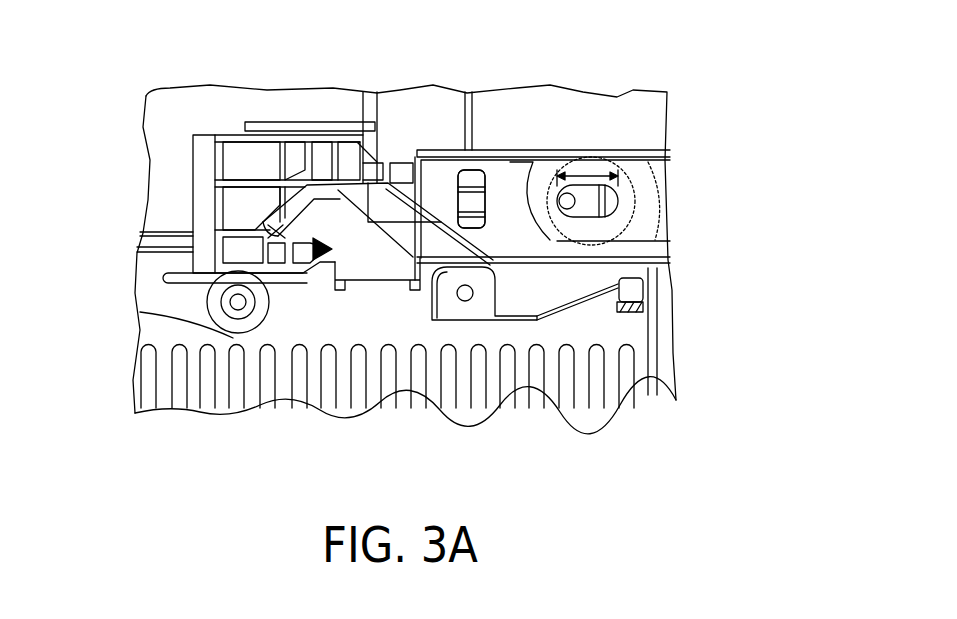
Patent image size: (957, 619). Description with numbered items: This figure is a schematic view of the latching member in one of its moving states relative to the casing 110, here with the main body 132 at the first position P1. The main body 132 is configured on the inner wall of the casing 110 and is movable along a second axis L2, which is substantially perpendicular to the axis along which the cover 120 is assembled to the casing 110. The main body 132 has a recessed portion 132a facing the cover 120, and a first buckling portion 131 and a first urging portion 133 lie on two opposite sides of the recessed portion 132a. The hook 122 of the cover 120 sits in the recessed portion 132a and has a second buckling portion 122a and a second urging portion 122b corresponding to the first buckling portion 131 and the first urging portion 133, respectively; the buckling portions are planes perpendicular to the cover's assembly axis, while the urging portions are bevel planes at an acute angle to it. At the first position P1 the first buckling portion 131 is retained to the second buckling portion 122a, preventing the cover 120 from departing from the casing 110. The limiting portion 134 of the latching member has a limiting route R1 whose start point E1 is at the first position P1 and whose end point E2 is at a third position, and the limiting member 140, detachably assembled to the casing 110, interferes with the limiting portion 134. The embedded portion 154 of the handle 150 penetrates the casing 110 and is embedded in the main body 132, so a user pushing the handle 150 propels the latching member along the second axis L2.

The casing 110 is at (643, 107).
The cover 120 is at (633, 323).
The hook 122 is at (363, 265).
The second buckling portion 122a is at (310, 262).
The second urging portion 122b is at (347, 200).
The first buckling portion 131 is at (262, 223).
The main body 132 is at (517, 177).
The recessed portion 132a is at (392, 204).
The first urging portion 133 is at (438, 230).
The limiting portion 134 is at (668, 168).
The limiting member 140 is at (582, 213).
The handle 150 is at (514, 128).
The embedded portion 154 is at (472, 185).
The first position P1 is at (190, 176).
The second axis L2 is at (808, 131).
The limiting route R1 is at (587, 168).
The start point E1 is at (540, 226).
The end point E2 is at (652, 230).